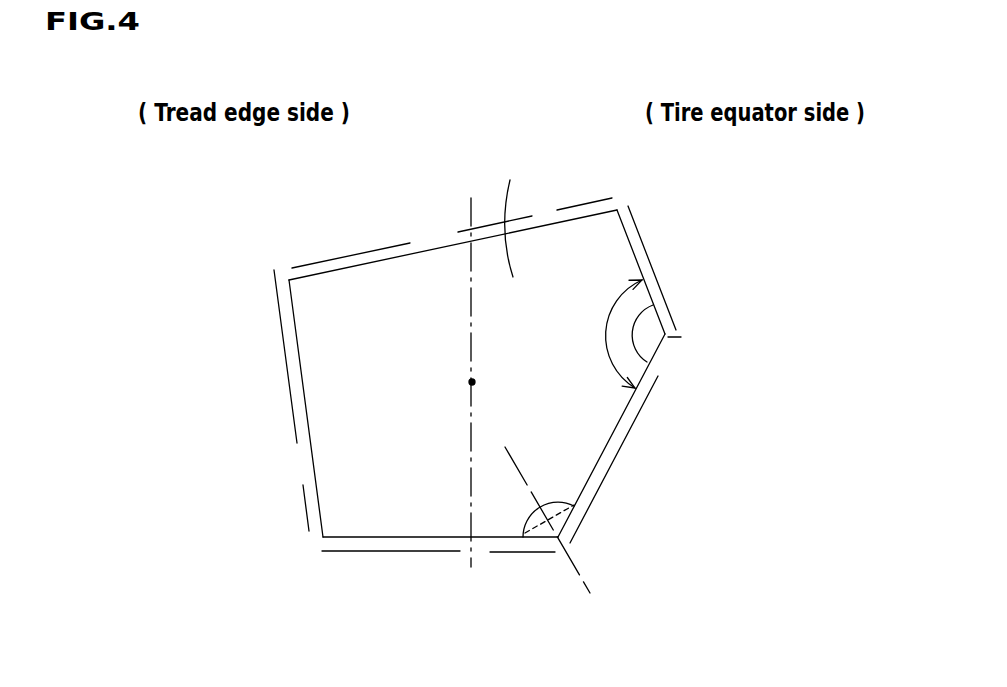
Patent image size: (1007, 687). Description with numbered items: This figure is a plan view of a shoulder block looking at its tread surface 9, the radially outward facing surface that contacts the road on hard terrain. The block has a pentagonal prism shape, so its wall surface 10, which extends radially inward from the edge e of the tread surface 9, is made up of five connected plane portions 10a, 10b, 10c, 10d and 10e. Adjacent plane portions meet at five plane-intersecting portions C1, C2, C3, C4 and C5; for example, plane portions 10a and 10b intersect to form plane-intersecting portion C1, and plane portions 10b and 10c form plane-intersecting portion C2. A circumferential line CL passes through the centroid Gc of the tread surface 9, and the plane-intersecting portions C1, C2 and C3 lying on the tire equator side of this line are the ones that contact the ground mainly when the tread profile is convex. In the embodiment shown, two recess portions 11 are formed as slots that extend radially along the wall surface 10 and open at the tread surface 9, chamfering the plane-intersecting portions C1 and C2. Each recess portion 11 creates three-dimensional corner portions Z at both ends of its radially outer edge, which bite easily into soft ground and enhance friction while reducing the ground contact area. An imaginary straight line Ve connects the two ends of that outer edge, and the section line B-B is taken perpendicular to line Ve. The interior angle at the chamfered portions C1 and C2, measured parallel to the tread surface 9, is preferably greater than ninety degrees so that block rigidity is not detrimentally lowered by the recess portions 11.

The tread surface 9 is at (514, 216).
The wall surface 10 is at (314, 262).
The plane portion 10a is at (407, 539).
The plane portion 10b is at (613, 437).
The plane portion 10c is at (637, 233).
The plane portion 10d is at (392, 260).
The plane portion 10e is at (307, 418).
The recess portion 11 is at (648, 325).
The plane-intersecting portion C1 is at (578, 543).
The plane-intersecting portion C2 is at (669, 302).
The plane-intersecting portion C3 is at (613, 204).
The plane-intersecting portion C4 is at (268, 279).
The plane-intersecting portion C5 is at (320, 548).
The circumferential line CL is at (468, 223).
The corner portion Z is at (651, 299).
The line B- B is at (548, 519).
The imaginary straight line Ve is at (547, 540).
The centroid Gc is at (470, 380).
The edge e is at (292, 317).